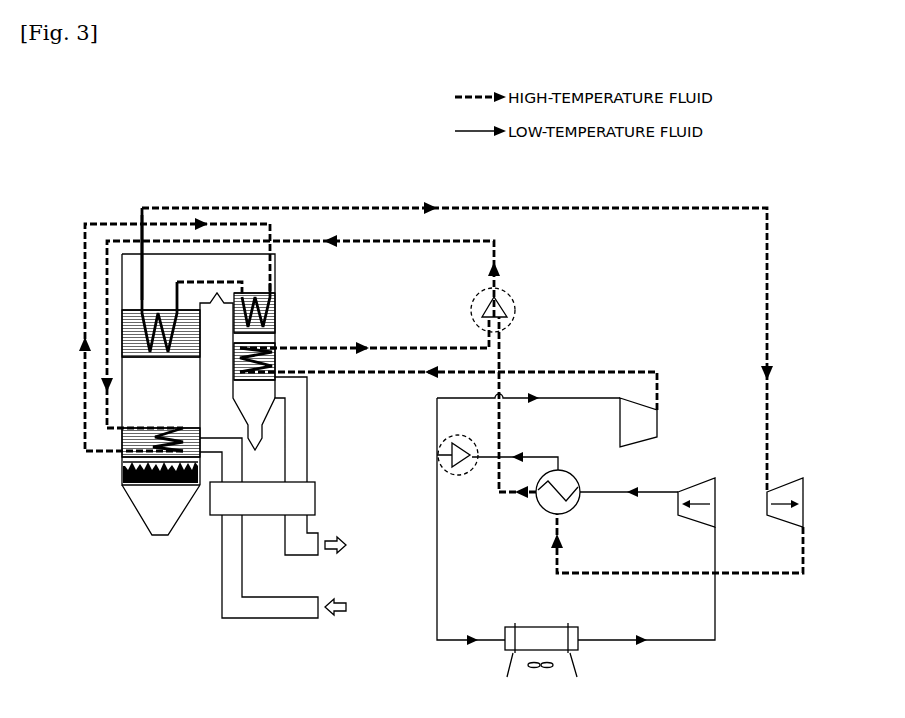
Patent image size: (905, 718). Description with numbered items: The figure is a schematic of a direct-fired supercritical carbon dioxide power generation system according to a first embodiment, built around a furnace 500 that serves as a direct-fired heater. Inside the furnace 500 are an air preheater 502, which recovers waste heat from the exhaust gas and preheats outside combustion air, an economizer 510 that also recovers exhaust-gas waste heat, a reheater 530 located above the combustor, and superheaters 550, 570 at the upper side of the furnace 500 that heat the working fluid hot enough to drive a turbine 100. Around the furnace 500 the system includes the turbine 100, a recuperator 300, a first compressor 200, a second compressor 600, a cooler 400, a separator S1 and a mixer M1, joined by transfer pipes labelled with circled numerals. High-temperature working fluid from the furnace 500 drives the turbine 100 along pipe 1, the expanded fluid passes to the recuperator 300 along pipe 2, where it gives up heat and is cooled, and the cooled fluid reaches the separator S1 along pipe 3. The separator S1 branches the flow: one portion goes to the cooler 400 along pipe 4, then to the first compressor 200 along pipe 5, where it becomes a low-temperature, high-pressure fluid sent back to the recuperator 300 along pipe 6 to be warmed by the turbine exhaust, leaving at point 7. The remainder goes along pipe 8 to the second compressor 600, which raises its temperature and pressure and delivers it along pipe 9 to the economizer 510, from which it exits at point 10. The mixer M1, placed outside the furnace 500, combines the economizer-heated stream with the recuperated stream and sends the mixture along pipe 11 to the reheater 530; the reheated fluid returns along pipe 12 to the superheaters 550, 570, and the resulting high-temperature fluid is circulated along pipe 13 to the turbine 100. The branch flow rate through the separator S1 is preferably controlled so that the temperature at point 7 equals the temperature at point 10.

The turbine 100 is at (803, 511).
The first compressor 200 is at (713, 511).
The recuperator 300 is at (580, 478).
The cooler 400 is at (522, 646).
The furnace 500 is at (135, 510).
The air preheater 502 is at (267, 503).
The economizer 510 is at (272, 359).
The reheater 530 is at (140, 440).
The superheater 550 is at (257, 300).
The superheater 570 is at (192, 308).
The second compressor 600 is at (657, 424).
The mixer M1 is at (515, 304).
The separator S1 is at (465, 467).
The transfer pipe 1 is at (472, 347).
The transfer pipe 2 is at (677, 559).
The transfer pipe 3 is at (497, 449).
The transfer pipe 4 is at (469, 533).
The transfer pipe 5 is at (646, 598).
The transfer pipe 6 is at (629, 503).
The transfer pipe 7 is at (513, 418).
The transfer pipe 8 is at (528, 407).
The transfer pipe 9 is at (448, 388).
The transfer pipe 10 is at (364, 335).
The transfer pipe 11 is at (312, 331).
The transfer pipe 12 is at (162, 334).
The transfer pipe 13 is at (154, 257).